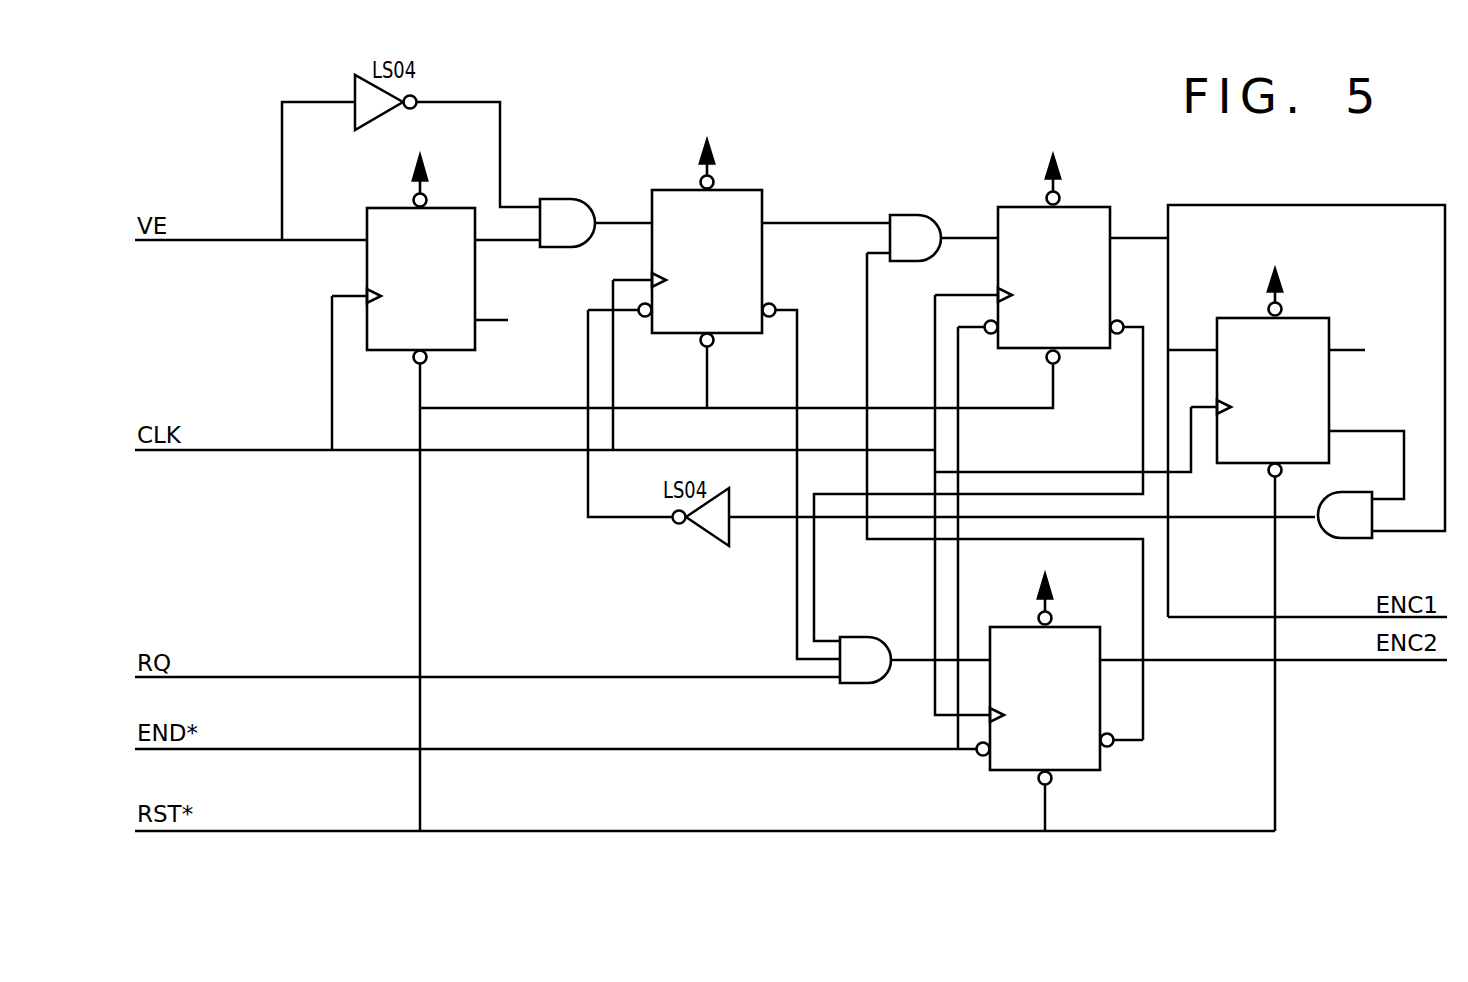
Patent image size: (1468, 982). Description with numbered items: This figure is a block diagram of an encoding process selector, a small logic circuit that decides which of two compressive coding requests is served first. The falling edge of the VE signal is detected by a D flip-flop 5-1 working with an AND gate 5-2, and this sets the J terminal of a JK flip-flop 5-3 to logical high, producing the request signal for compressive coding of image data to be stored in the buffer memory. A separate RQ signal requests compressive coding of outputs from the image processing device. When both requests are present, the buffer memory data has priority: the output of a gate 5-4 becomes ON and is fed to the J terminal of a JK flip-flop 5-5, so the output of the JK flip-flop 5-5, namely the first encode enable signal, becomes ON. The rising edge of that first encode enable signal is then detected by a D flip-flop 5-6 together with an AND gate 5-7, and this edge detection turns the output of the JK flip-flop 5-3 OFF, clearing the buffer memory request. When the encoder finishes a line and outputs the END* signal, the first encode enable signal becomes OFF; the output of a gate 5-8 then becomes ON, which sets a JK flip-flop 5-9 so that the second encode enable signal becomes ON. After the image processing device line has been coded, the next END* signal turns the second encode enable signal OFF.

The D flip-flop 5-1 is at (367, 208).
The AND gate 5-2 is at (566, 199).
The JK flip-flop 5-3 is at (762, 196).
The gate 5-4 is at (915, 215).
The JK flip-flop 5-5 is at (1090, 207).
The D flip-flop 5-6 is at (1329, 320).
The AND gate 5-7 is at (1333, 538).
The gate 5-8 is at (852, 637).
The JK flip-flop 5-9 is at (1101, 771).